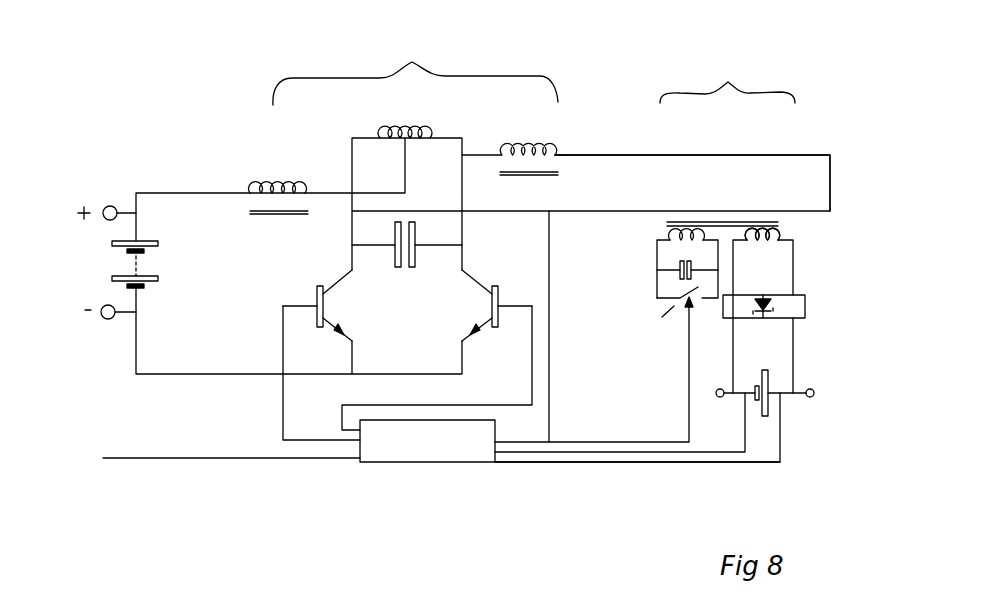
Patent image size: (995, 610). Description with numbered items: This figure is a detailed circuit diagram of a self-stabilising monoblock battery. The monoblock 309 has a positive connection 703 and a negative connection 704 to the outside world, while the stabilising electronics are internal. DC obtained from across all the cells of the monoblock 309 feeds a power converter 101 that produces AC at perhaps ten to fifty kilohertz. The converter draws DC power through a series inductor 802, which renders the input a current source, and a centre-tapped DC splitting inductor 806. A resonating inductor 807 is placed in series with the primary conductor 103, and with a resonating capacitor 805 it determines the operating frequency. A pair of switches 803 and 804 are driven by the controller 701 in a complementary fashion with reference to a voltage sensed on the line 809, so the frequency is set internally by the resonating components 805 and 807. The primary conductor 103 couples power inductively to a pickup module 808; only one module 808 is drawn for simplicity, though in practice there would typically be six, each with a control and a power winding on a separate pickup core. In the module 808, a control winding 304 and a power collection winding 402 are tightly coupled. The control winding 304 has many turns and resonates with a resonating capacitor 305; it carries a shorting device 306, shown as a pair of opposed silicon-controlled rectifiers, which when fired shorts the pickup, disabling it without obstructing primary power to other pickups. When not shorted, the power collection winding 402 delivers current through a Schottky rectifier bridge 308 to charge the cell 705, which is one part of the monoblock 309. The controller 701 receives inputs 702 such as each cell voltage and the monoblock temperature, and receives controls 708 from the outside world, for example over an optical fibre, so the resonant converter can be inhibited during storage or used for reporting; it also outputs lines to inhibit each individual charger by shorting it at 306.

The power converter 101 is at (415, 68).
The primary conductor 103 is at (647, 155).
The control winding 304 is at (667, 235).
The resonating capacitor 305 is at (680, 268).
The shorting device 306 is at (664, 317).
The Schottky rectifier bridge 308 is at (805, 298).
The monoblock 309 is at (190, 280).
The power collection winding 402 is at (778, 235).
The controller 701 is at (430, 462).
The sense conductors (inputs) 702 is at (707, 465).
The positive connection 703 is at (107, 205).
The negative connection 704 is at (108, 319).
The cell 705 is at (770, 403).
The optical fibre (controls) 708 is at (158, 458).
The series inductor 802 is at (292, 185).
The switch 803 is at (318, 285).
The switch 804 is at (495, 285).
The resonating capacitor 805 is at (418, 265).
The centre-tapped DC splitting inductor 806 is at (410, 130).
The resonating inductor 807 is at (550, 145).
The module 808 is at (727, 77).
The line 809 is at (552, 402).